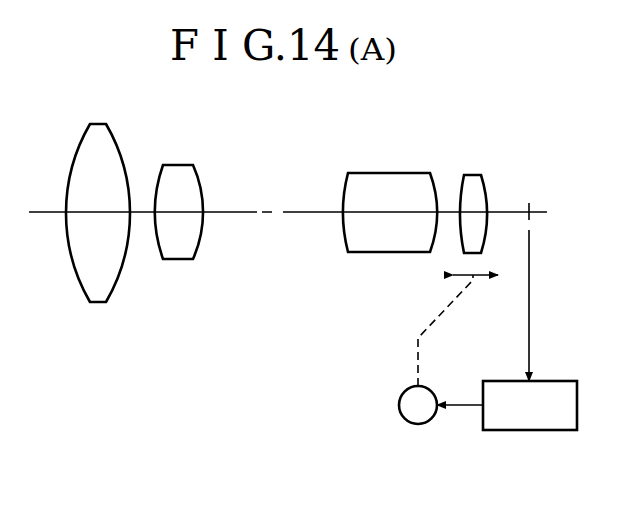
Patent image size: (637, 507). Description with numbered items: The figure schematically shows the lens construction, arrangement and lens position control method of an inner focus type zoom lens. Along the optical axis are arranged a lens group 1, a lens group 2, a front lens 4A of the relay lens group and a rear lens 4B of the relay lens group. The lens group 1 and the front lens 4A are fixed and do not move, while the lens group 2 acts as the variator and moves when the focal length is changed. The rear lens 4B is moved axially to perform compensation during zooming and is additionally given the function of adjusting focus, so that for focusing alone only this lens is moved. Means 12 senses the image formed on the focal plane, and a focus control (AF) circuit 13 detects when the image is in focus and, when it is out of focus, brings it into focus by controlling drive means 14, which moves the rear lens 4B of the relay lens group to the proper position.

The first lens group 1 is at (83, 173).
The lens group 2 is at (180, 177).
The front lens of relay lens group 4A is at (393, 188).
The rear lens of relay lens group 4B is at (473, 187).
The means for sensing an image 12 is at (537, 202).
The focus control (AF) circuit 13 is at (558, 380).
The drive means 14 is at (400, 397).